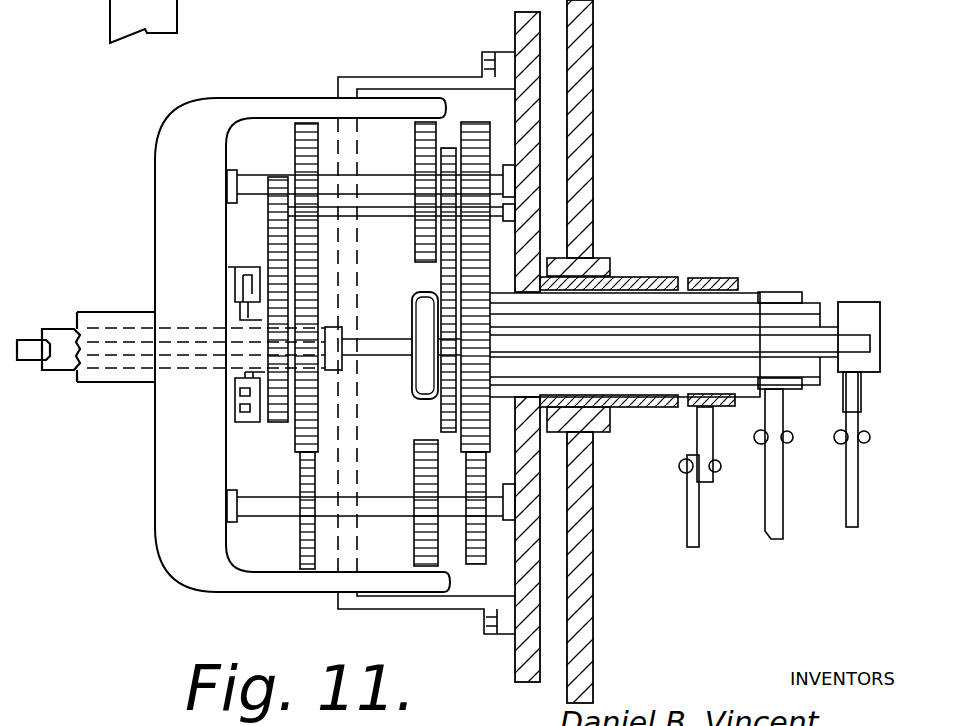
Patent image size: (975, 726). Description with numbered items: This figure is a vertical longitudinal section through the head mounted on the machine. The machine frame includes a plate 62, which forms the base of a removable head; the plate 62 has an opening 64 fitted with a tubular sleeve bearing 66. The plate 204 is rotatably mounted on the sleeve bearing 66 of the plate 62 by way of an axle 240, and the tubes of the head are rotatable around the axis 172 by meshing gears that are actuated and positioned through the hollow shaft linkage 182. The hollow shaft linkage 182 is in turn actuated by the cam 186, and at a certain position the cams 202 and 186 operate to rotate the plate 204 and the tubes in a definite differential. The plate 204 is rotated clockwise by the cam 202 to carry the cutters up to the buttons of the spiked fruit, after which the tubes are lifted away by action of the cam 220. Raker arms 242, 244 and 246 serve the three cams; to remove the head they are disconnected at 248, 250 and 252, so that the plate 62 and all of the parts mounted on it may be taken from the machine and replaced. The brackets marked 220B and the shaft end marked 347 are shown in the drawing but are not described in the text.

The plate 204 is at (515, 35).
The plate 62 is at (594, 75).
The opening 64 is at (638, 240).
The tubular sleeve bearing 66 is at (684, 259).
The axle 240 is at (700, 278).
The hollow shaft linkage 182 is at (870, 286).
The shaft end coupling 347 is at (31, 338).
The axis 172 is at (57, 342).
The bracket 220B is at (230, 269).
The cam 202 is at (697, 428).
The raker arm 242 is at (687, 516).
The disconnection point 248 is at (679, 466).
The raker arm 244 is at (765, 512).
The disconnection point 250 is at (763, 443).
The raker arm 246 is at (846, 512).
The cam 186 is at (852, 414).
The disconnection point 252 is at (840, 441).
The cam 220 is at (783, 405).